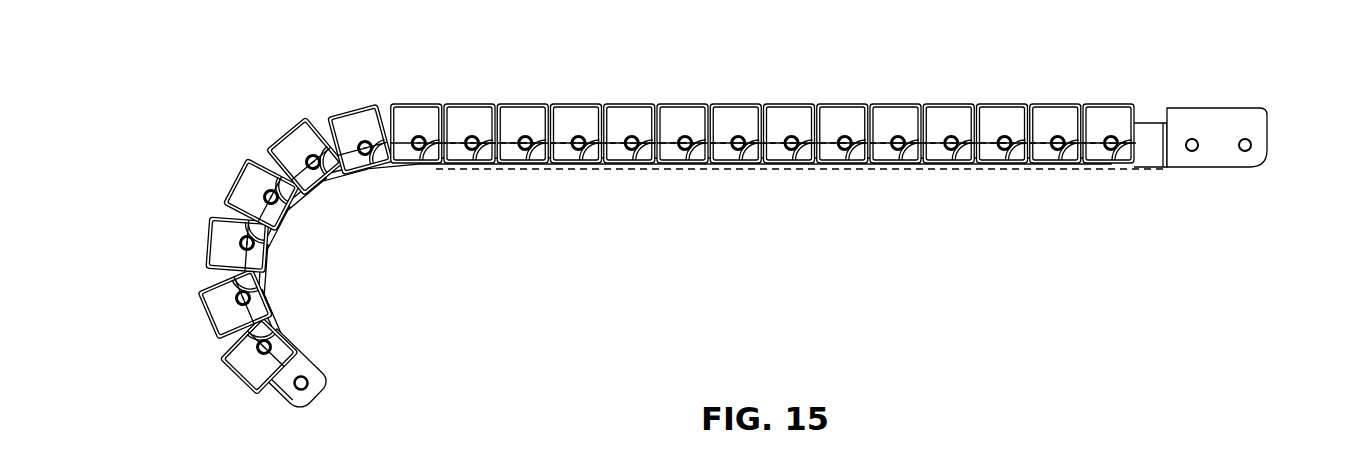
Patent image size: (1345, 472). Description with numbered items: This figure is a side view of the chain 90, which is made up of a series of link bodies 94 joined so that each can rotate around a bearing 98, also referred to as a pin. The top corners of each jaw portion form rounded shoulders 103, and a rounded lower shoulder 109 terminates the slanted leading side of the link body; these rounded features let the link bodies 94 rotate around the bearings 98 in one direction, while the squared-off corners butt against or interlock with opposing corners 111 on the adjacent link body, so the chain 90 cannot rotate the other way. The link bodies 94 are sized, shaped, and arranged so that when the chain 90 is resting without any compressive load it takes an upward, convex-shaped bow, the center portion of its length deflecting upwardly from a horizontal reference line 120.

The chain 90 is at (1233, 121).
The link body 94 is at (832, 152).
The bearing 98 is at (566, 118).
The rounded corner 103 is at (629, 136).
The rounded lower shoulder 109 is at (770, 166).
The opposing corner 111 is at (698, 166).
The horizontal reference line 120 is at (984, 168).